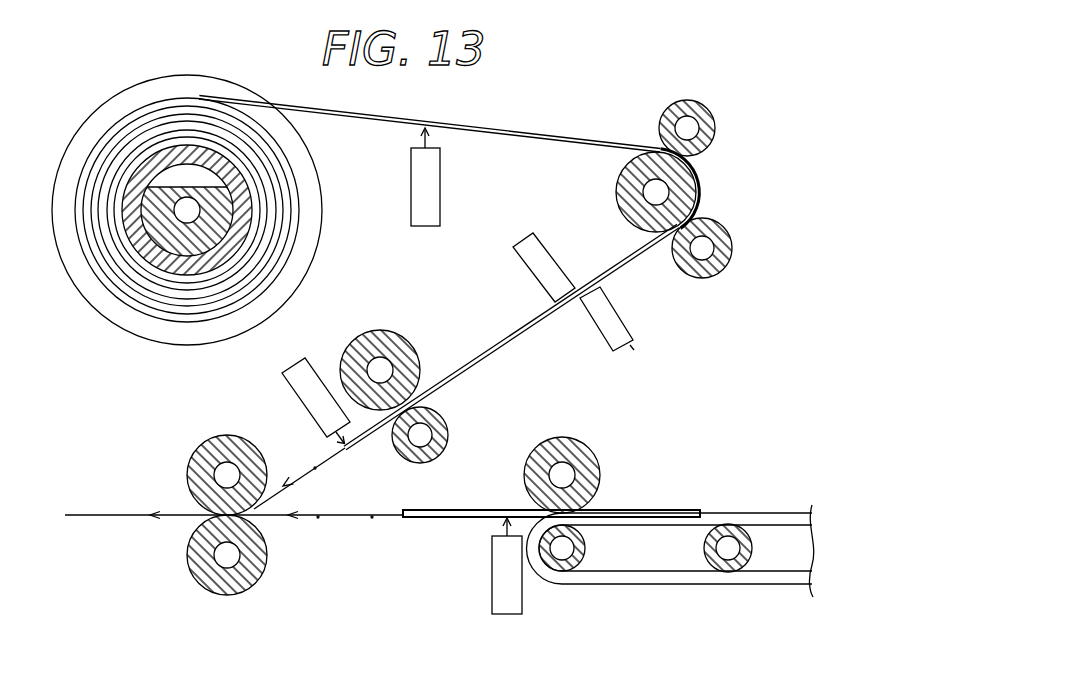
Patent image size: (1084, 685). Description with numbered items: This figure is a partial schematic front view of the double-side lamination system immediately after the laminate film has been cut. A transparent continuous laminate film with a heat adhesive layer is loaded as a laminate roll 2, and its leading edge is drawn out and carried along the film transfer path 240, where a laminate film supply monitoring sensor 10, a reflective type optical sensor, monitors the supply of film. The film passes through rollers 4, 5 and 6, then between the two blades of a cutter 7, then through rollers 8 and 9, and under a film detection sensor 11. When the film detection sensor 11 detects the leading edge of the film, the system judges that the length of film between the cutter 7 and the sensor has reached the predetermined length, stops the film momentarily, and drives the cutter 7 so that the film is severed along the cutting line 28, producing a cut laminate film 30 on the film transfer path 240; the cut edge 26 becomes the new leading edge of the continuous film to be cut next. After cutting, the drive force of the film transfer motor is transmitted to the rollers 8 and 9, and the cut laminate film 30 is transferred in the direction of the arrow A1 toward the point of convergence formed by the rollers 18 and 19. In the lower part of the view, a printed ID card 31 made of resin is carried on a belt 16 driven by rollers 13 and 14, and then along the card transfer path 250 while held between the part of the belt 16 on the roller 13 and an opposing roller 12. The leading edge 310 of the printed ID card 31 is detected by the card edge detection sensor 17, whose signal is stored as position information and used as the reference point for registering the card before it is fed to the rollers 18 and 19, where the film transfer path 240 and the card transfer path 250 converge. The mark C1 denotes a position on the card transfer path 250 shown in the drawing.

The laminate roll 2 is at (137, 118).
The film transfer path 240 is at (567, 139).
The laminate film supply monitoring sensor 10 is at (411, 180).
The roller 5 is at (692, 101).
The roller 4 is at (615, 184).
The roller 6 is at (712, 276).
The cut laminate film 30 is at (498, 330).
The cut edge 26 is at (573, 288).
The cutting line 28 is at (583, 303).
The cutter 7 is at (632, 350).
The roller 8 is at (412, 353).
The roller 9 is at (447, 425).
The film detection sensor 11 is at (289, 378).
The arrow A1 is at (315, 466).
The roller 18 is at (212, 440).
The roller 19 is at (237, 595).
The roller 12 is at (592, 450).
The leading edge 310 is at (397, 511).
The position C1 is at (320, 518).
The card transfer path 250 is at (372, 518).
The printed ID card 31 is at (657, 509).
The belt 16 is at (655, 585).
The roller 13 is at (561, 573).
The roller 14 is at (733, 573).
The card edge detection sensor 17 is at (506, 614).